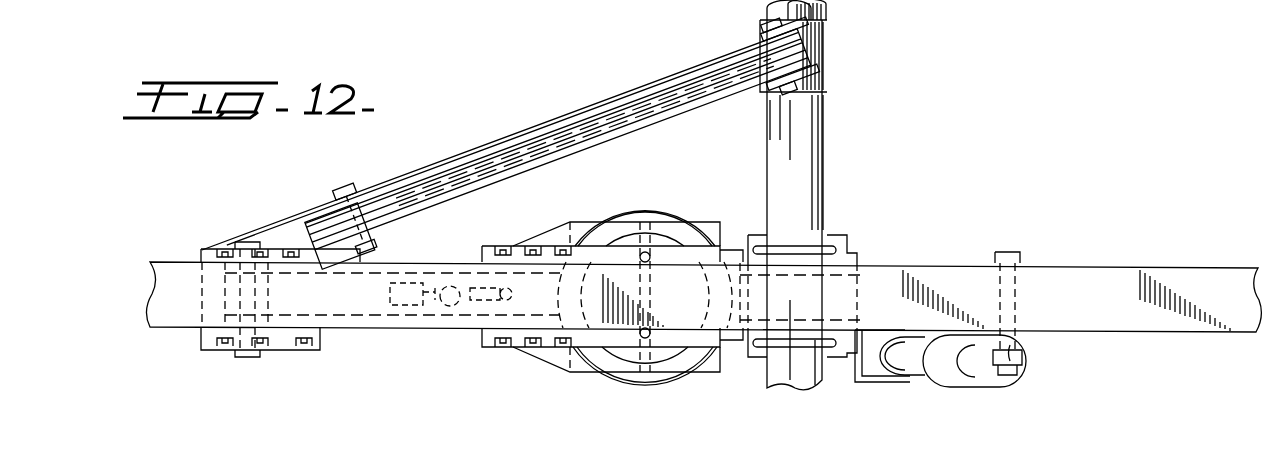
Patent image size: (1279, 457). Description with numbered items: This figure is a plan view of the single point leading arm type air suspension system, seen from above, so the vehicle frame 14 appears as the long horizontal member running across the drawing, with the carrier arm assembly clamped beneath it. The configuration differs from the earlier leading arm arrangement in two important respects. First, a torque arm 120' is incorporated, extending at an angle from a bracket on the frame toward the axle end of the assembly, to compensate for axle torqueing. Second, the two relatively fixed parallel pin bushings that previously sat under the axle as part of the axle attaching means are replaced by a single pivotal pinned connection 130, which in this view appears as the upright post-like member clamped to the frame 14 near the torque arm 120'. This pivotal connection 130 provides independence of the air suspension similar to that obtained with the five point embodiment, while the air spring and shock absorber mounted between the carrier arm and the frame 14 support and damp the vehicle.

The frame 14 is at (1222, 268).
The torque arm 120' is at (512, 157).
The pivotal pinned connection 130 is at (820, 0).